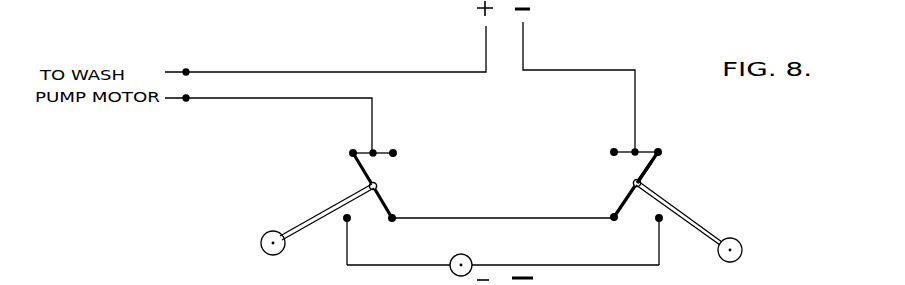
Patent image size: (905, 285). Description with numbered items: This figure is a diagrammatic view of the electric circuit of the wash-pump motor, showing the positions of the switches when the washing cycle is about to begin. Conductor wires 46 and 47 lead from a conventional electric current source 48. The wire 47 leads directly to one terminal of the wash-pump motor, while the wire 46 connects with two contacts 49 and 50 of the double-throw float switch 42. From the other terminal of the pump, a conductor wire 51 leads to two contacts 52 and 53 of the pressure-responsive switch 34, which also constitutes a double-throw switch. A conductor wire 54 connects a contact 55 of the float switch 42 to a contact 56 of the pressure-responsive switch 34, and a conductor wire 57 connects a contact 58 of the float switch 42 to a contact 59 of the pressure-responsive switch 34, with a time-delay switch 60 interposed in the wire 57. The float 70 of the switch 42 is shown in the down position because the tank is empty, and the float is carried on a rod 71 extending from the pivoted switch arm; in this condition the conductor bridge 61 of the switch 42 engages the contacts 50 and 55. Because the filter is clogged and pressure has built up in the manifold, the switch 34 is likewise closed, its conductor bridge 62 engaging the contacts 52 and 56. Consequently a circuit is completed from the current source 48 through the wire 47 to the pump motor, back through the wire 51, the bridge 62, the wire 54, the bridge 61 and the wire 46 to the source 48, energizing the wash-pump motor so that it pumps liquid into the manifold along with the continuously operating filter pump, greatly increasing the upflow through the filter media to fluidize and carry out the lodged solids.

The pressure-responsive switch 34 is at (383, 185).
The double-throw float switch 42 is at (648, 179).
The conductor wire 46 is at (601, 69).
The conductor wire 47 is at (372, 71).
The electric current source 48 is at (506, 7).
The contact 49 is at (613, 149).
The contact 50 is at (659, 149).
The conductor wire 51 is at (258, 99).
The contact 52 is at (352, 150).
The contact 53 is at (396, 151).
The conductor wire 54 is at (482, 217).
The contact 55 is at (611, 222).
The contact 56 is at (388, 222).
The conductor wire 57 is at (541, 263).
The contact 58 is at (662, 222).
The contact 59 is at (343, 221).
The time-delay switch 60 is at (462, 255).
The conductor bridge 61 is at (641, 171).
The conductor bridge 62 is at (365, 172).
The float 70 is at (757, 233).
The actuating rod 71 is at (714, 230).